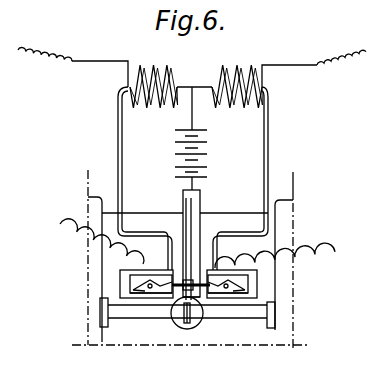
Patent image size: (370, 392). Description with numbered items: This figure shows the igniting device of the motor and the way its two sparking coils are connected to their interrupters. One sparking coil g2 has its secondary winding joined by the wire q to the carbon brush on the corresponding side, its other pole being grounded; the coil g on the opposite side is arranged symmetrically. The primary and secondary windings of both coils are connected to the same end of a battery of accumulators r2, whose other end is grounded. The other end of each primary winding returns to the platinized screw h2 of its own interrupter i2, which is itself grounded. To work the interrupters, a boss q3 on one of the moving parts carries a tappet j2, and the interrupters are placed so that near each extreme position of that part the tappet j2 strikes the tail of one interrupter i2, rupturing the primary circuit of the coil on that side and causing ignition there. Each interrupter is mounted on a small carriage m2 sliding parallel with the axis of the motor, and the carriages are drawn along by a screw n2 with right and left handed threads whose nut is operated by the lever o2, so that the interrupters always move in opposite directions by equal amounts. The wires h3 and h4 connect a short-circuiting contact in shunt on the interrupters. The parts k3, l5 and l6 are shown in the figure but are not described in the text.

The wire q is at (12, 50).
The resistance g is at (146, 66).
The sparking coil g2 is at (241, 67).
The battery of accumulators r2 is at (206, 153).
The platinized screw h2 is at (167, 270).
The wire h3 is at (275, 245).
The wire h4 is at (88, 197).
The lever o2 is at (183, 240).
The small carriage m2 is at (122, 284).
The interrupter i2 is at (130, 293).
The tappet j2 is at (180, 298).
The casing k3 is at (10, 317).
The bracket l5 is at (258, 317).
The bracket l6 is at (168, 313).
The screw n2 is at (202, 300).
The boss q3 is at (181, 328).